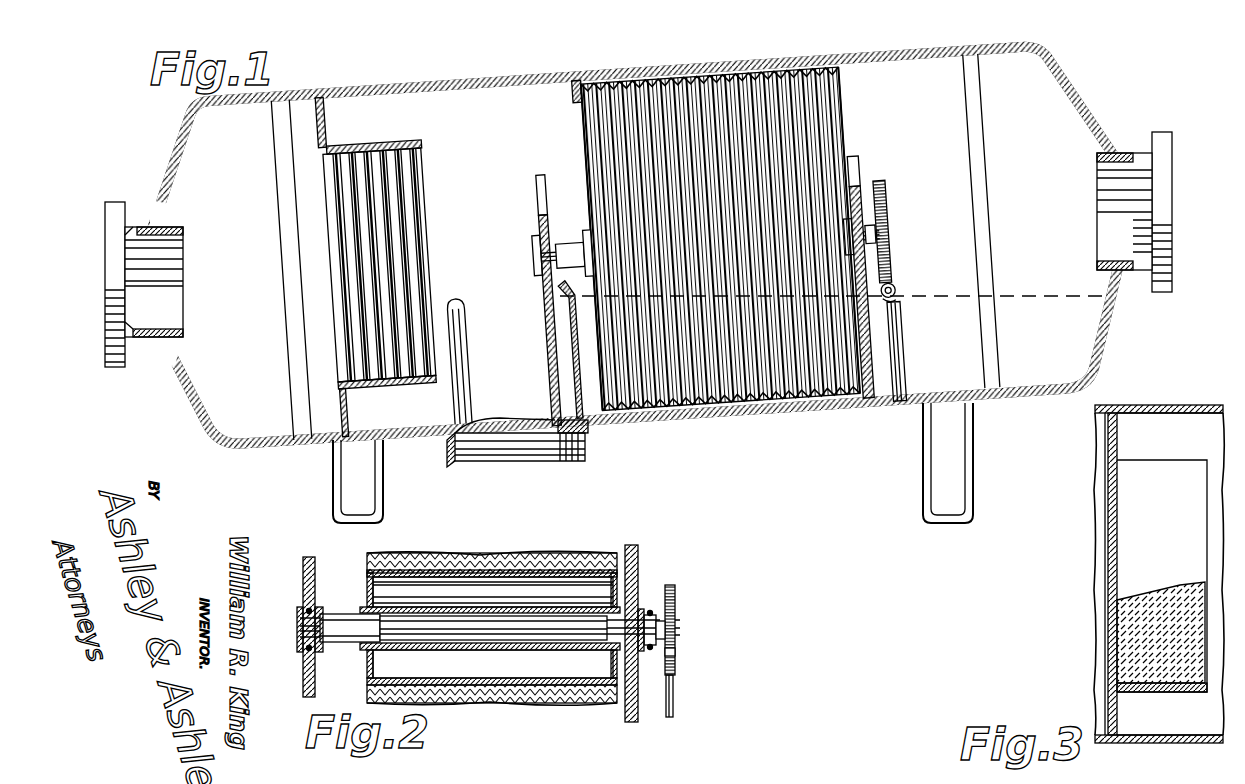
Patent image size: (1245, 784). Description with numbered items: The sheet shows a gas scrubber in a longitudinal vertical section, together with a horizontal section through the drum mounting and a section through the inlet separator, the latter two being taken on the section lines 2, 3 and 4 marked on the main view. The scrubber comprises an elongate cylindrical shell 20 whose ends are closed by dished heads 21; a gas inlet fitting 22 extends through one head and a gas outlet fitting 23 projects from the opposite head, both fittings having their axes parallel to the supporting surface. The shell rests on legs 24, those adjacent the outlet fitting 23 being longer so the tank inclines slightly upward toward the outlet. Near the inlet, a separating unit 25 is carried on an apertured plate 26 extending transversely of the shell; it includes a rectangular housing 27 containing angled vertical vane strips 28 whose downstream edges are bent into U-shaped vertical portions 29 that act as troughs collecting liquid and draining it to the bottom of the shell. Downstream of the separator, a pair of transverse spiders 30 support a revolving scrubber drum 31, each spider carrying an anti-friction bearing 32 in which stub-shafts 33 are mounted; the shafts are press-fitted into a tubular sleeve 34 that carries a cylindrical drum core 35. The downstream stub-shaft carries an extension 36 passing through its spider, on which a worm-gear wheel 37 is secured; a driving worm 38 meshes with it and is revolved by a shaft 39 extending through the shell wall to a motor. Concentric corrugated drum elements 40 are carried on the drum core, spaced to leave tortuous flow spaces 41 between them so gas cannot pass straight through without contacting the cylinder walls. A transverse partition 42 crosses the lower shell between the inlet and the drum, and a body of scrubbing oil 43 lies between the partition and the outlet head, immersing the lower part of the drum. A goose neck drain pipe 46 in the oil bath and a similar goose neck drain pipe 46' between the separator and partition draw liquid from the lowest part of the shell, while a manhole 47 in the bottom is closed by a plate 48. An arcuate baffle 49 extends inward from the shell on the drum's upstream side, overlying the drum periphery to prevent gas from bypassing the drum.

In FIG. 1, the shell 20 is at (828, 412).
In FIG. 1, the dished heads 21 is at (245, 445).
In FIG. 1, the gas inlet fitting 22 is at (136, 212).
In FIG. 1, the gas outlet fitting 23 is at (1160, 290).
In FIG. 1, the legs 24 is at (383, 467).
In FIG. 1, the separating unit 25 is at (405, 200).
In FIG. 1, the apertured plate 26 is at (330, 120).
In FIG. 1, the rectangular housing 27 is at (422, 142).
In FIG. 3, the rectangular housing 27 is at (1137, 510).
In FIG. 1, the vane strips 28 is at (415, 387).
In FIG. 3, the vane strips 28 is at (1122, 632).
In FIG. 3, the U-shaped vertical portions 29 is at (1157, 603).
In FIG. 1, the transverse spiders 30 is at (545, 192).
In FIG. 2, the transverse spiders 30 is at (306, 562).
In FIG. 1, the scrubber drum 31 is at (810, 85).
In FIG. 2, the scrubber drum 31 is at (455, 565).
In FIG. 2, the anti-friction bearing 32 is at (316, 612).
In FIG. 1, the stub-shafts 33 is at (706, 245).
In FIG. 2, the stub-shafts 33 is at (335, 636).
In FIG. 2, the shaft sleeve 34 is at (465, 630).
In FIG. 2, the drum core 35 is at (535, 704).
In FIG. 2, the shaft extension 36 is at (676, 656).
In FIG. 2, the worm-gear wheel 37 is at (680, 641).
In FIG. 1, the driving worm 38 is at (897, 289).
In FIG. 2, the driving worm 38 is at (680, 620).
In FIG. 1, the shaft 39 is at (900, 300).
In FIG. 2, the shaft 39 is at (675, 700).
In FIG. 1, the concentric drum elements 40 is at (737, 415).
In FIG. 2, the concentric drum elements 40 is at (563, 562).
In FIG. 2, the flow spaces 41 is at (483, 554).
In FIG. 1, the transverse partition 42 is at (578, 355).
In FIG. 1, the scrubbing oil 43 is at (1022, 330).
In FIG. 1, the goose neck drain pipe 46 is at (922, 352).
In FIG. 1, the goose neck drain pipe 46' is at (483, 352).
In FIG. 1, the manhole 47 is at (568, 440).
In FIG. 1, the closure plate 48 is at (530, 457).
In FIG. 1, the arcuate baffle 49 is at (578, 100).
In FIG. 1, the section line 2- 2 is at (527, 260).
In FIG. 1, the section line 3- 3 is at (318, 276).
In FIG. 1, the section line 4- 4 is at (578, 80).